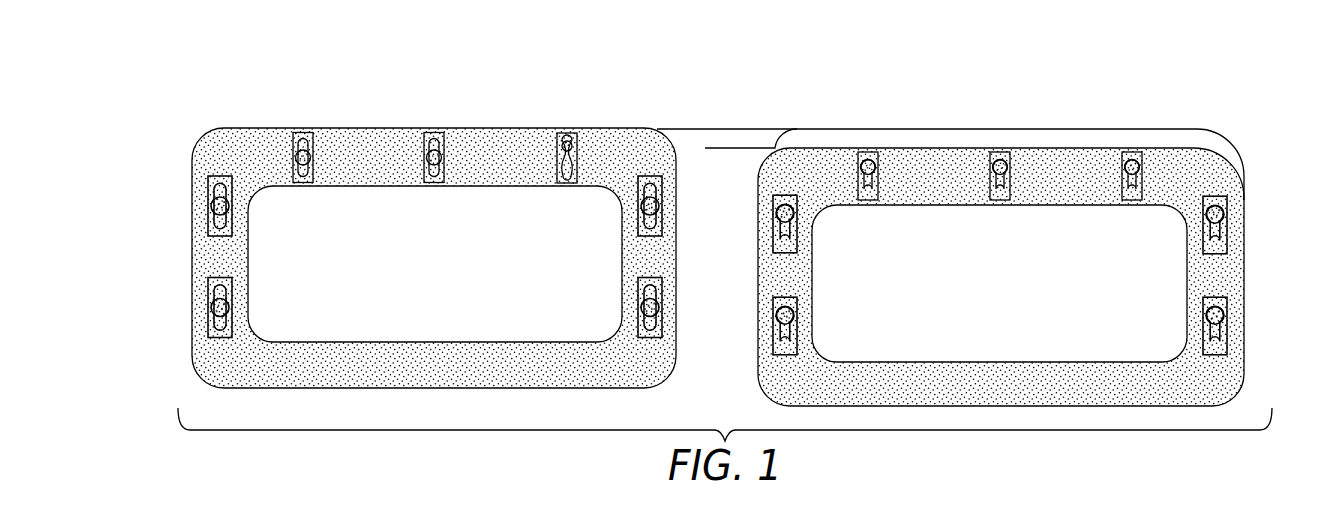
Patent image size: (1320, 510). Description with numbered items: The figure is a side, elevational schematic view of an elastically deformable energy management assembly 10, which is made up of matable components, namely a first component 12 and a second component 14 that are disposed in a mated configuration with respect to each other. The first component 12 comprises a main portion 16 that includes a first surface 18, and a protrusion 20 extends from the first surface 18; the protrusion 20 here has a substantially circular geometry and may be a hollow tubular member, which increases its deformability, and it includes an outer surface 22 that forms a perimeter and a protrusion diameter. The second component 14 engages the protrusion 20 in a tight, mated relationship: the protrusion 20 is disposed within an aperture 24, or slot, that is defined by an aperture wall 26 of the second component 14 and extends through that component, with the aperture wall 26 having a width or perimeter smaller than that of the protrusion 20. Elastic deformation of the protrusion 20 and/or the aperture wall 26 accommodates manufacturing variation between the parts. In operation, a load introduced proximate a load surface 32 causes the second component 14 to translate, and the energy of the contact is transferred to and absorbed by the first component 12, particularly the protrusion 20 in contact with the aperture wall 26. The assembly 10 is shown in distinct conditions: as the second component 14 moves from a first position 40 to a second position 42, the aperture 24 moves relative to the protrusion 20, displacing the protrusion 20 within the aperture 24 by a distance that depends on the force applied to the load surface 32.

The elastically deformable energy management assembly 10 is at (298, 88).
The first component 12 is at (1130, 123).
The second component 14 is at (380, 126).
The main portion 16 is at (1020, 137).
The first surface 18 is at (950, 164).
The protrusion 20 is at (295, 150).
The outer surface 22 is at (1137, 166).
The aperture 24 is at (556, 148).
The aperture wall 26 is at (574, 138).
The load surface 32 is at (490, 140).
The first position 40 is at (305, 392).
The second position 42 is at (1107, 410).